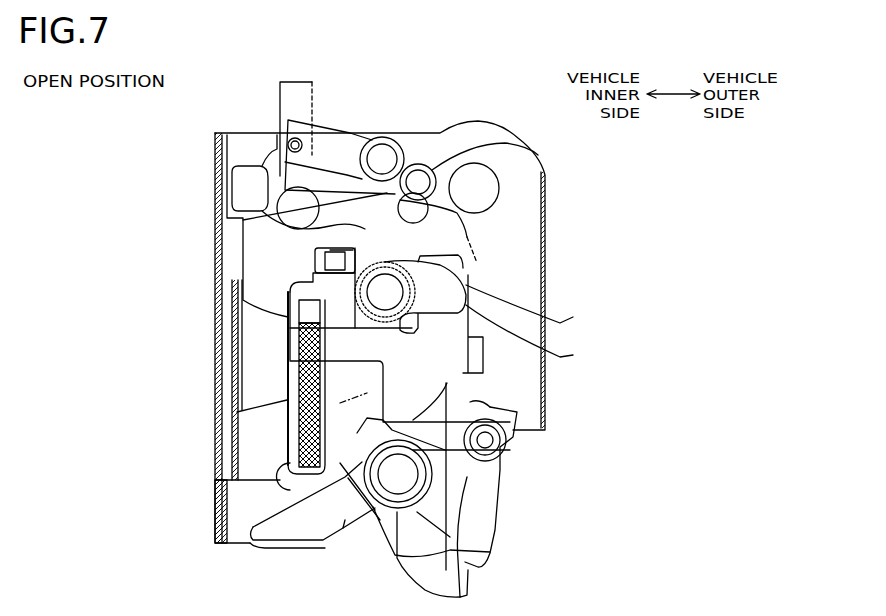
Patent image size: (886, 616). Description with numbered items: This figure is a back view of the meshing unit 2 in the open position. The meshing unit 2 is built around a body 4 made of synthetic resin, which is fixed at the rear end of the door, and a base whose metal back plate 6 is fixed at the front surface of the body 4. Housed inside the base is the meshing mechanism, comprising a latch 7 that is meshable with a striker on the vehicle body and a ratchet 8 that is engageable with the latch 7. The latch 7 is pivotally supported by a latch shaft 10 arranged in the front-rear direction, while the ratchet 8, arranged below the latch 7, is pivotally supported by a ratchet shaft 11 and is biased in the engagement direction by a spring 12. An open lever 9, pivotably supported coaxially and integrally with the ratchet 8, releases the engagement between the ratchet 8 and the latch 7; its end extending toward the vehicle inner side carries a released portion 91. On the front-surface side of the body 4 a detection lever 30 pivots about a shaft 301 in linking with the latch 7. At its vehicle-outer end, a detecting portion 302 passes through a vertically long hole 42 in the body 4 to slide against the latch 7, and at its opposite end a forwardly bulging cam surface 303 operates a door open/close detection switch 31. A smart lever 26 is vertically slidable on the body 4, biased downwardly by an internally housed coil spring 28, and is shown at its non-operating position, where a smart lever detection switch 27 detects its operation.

The meshing unit 2 is at (546, 282).
The body 4 is at (538, 155).
The back plate 6 is at (472, 294).
The latch 7 is at (467, 237).
The ratchet 8 is at (503, 487).
The open lever 9 is at (492, 530).
The latch shaft 10 is at (445, 421).
The ratchet shaft 11 is at (393, 485).
The spring 12 is at (445, 535).
The smart lever 26 is at (283, 380).
The smart lever detection switch 27 is at (327, 259).
The coil spring 28 is at (287, 433).
The detection lever 30 is at (335, 131).
The door open/close detection switch 31 is at (280, 102).
The long hole 42 is at (513, 137).
The released portion 91 is at (218, 538).
The shaft 301 is at (400, 130).
The detecting portion 302 is at (470, 190).
The cam surface 303 is at (327, 137).